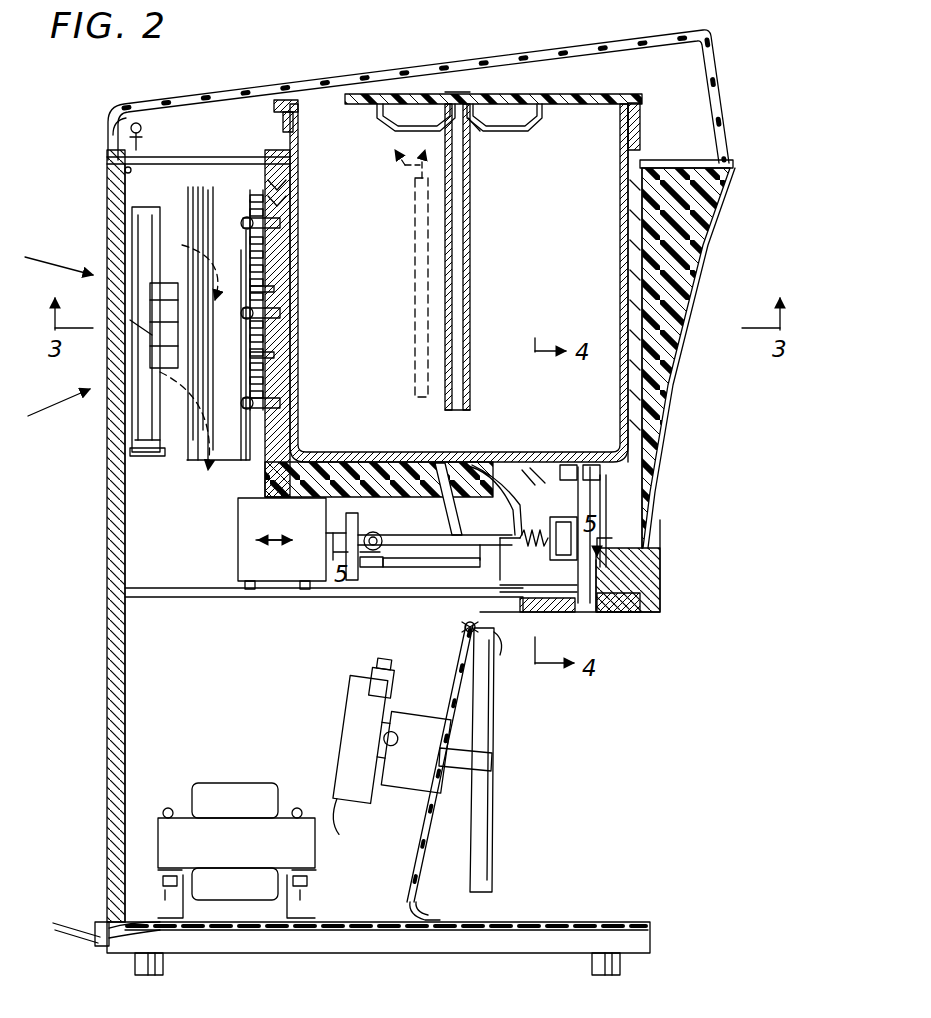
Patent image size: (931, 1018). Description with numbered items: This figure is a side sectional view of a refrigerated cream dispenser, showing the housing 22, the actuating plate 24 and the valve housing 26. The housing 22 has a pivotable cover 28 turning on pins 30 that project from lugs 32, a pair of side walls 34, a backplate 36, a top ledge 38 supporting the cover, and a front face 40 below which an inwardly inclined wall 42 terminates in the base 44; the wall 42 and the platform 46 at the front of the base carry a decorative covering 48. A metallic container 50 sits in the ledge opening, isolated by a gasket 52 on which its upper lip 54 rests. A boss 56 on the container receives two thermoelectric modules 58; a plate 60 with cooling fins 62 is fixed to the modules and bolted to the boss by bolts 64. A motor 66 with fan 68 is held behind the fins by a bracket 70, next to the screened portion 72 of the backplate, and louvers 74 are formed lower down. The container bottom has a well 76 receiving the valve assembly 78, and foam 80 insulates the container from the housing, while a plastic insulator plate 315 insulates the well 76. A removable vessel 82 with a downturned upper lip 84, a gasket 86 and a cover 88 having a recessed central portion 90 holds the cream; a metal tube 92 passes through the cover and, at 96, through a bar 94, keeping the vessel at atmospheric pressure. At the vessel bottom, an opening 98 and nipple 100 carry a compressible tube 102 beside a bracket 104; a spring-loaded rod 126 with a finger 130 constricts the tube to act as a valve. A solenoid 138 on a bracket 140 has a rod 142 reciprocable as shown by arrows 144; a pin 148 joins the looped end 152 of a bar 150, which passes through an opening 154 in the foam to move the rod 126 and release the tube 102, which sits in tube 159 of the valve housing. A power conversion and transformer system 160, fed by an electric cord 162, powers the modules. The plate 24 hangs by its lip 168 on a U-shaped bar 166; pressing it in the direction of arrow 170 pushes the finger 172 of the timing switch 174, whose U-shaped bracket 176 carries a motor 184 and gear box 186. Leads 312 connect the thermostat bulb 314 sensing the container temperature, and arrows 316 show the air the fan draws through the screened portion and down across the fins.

The housing 22 is at (107, 524).
The actuating plate 24 is at (496, 727).
The valve housing 26 is at (656, 552).
The pivotable cover 28 is at (578, 40).
The pins 30 is at (141, 130).
The lugs 32 is at (115, 128).
The side walls 34 is at (264, 680).
The backplate 36 is at (107, 499).
The top ledge 38 is at (688, 160).
The front face 40 is at (673, 379).
The inwardly inclined wall 42 is at (422, 835).
The base 44 is at (450, 940).
The platform 46 is at (548, 922).
The covering 48 is at (428, 918).
The metallic container 50 is at (635, 224).
The gasket 52 is at (270, 150).
The upper lip 54 is at (640, 150).
The boss 56 is at (270, 252).
The thermoelectric modules 58 is at (275, 290).
The plate 60 is at (258, 200).
The cooling fins 62 is at (190, 242).
The bolts 64 is at (282, 212).
The motor 66 is at (172, 346).
The fan 68 is at (152, 228).
The bracket 70 is at (140, 455).
The screened portion 72 is at (107, 240).
The louvers 74 is at (120, 628).
The well 76 is at (447, 464).
The valve assembly 78 is at (520, 500).
The foam 80 is at (685, 268).
The removable vessel 82 is at (546, 277).
The upper lip 84 is at (300, 113).
The gasket 86 is at (292, 128).
The cover 88 is at (590, 107).
The recessed central portion 90 is at (483, 135).
The metal tube 92 is at (470, 352).
The bar 94 is at (497, 97).
The tube passage 96 is at (454, 97).
The opening 98 is at (565, 467).
The nipple 100 is at (590, 467).
The compressible tube 102 is at (572, 494).
The bracket 104 is at (496, 467).
The rod 126 is at (536, 528).
The finger 130 is at (436, 585).
The solenoid 138 is at (240, 524).
The bracket 140 is at (339, 598).
The rod 142 is at (330, 530).
The arrows 144 is at (298, 528).
The pin 148 is at (375, 557).
The bar 150 is at (368, 553).
The end 152 is at (378, 545).
The opening 154 is at (420, 582).
The tube 159 is at (588, 612).
The power conversion and transformer system 160 is at (213, 788).
The electric cord 162 is at (88, 905).
The U-shaped bar 166 is at (466, 636).
The lip 168 is at (497, 636).
The arrow 170 is at (497, 814).
The finger 172 is at (467, 771).
The timing switch 174 is at (348, 716).
The U-shaped bracket 176 is at (445, 694).
The motor 184 is at (338, 758).
The gear box 186 is at (395, 683).
The leads 312 is at (389, 170).
The thermostat bulb 314 is at (416, 313).
The plastic insulator plate 315 is at (532, 612).
The arrows 316 is at (170, 392).